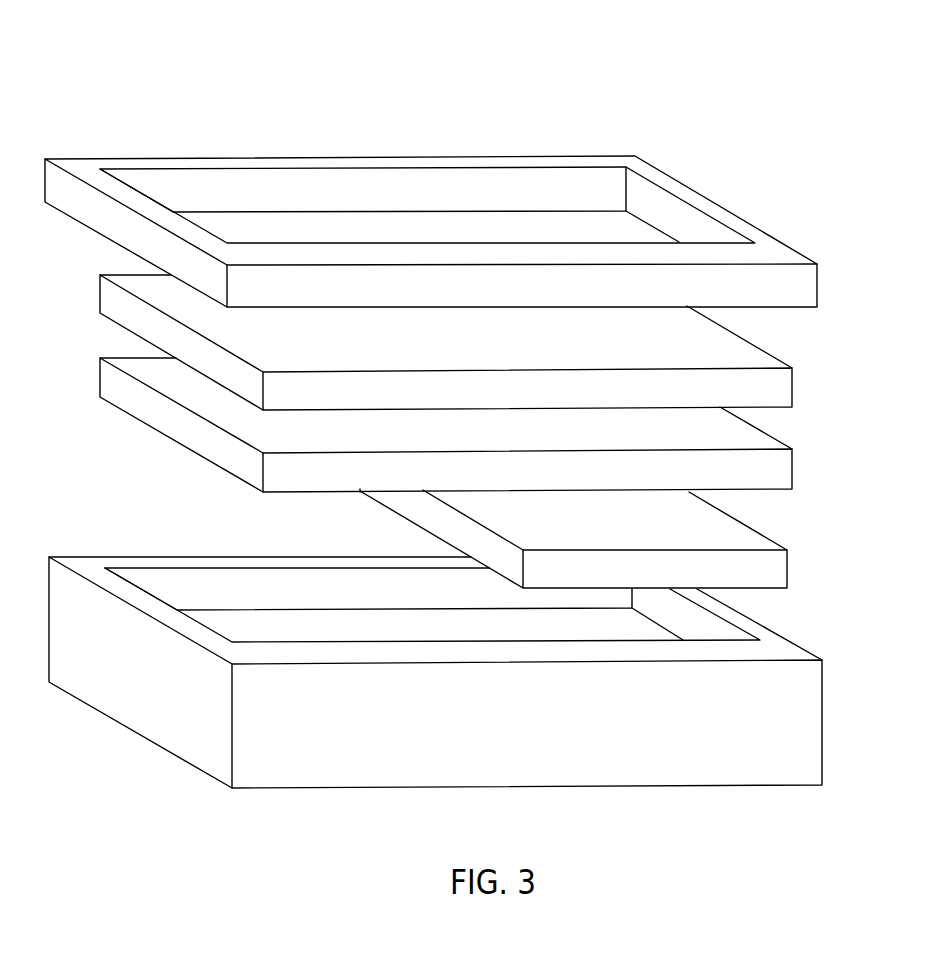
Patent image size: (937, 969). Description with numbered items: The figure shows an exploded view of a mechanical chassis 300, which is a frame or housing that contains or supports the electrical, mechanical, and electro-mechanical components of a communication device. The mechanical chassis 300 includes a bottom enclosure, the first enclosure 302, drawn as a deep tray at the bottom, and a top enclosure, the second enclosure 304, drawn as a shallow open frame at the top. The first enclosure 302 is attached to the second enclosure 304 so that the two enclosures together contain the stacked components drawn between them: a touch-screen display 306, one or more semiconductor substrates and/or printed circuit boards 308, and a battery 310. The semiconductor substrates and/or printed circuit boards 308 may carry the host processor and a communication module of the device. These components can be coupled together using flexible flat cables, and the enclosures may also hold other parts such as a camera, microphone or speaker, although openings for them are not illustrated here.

The mechanical chassis 300 is at (882, 116).
The first enclosure 302 is at (822, 687).
The second enclosure 304 is at (818, 283).
The touch-screen display 306 is at (792, 390).
The semiconductor substrates and/or printed circuit boards 308 is at (792, 478).
The battery 310 is at (787, 568).